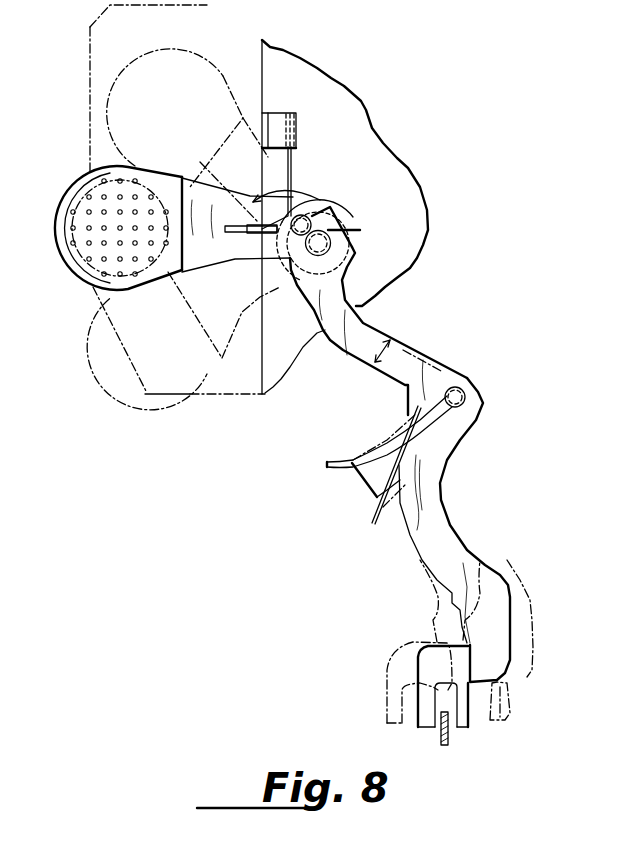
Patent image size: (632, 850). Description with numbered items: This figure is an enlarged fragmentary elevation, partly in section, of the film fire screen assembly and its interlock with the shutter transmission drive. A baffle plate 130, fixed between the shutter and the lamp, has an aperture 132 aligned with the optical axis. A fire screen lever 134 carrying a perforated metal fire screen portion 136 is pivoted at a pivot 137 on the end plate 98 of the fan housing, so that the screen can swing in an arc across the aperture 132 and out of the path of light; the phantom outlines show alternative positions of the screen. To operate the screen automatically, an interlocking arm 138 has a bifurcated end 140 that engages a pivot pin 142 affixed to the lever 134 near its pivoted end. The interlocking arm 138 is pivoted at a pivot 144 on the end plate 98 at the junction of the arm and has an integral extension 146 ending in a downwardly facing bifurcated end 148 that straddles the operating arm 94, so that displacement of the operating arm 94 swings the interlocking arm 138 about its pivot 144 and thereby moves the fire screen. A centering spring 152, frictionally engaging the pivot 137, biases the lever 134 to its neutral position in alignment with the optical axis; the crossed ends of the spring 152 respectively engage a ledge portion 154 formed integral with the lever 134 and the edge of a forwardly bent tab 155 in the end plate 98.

The operating arm 94 is at (443, 745).
The end plate 98 is at (365, 102).
The baffle plate 130 is at (90, 50).
The aperture 132 is at (62, 263).
The fire screen lever 134 is at (290, 184).
The fire screen portion 136 is at (197, 57).
The pivot 137 is at (337, 192).
The interlocking arm 138 is at (425, 342).
The bifurcated end 140 is at (353, 252).
The pivot pin 142 is at (342, 235).
The pivot 144 is at (468, 393).
The extension 146 is at (440, 528).
The bifurcated end 148 is at (387, 700).
The centering spring 152 is at (290, 160).
The ledge portion 154 is at (257, 240).
The tab 155 is at (267, 123).